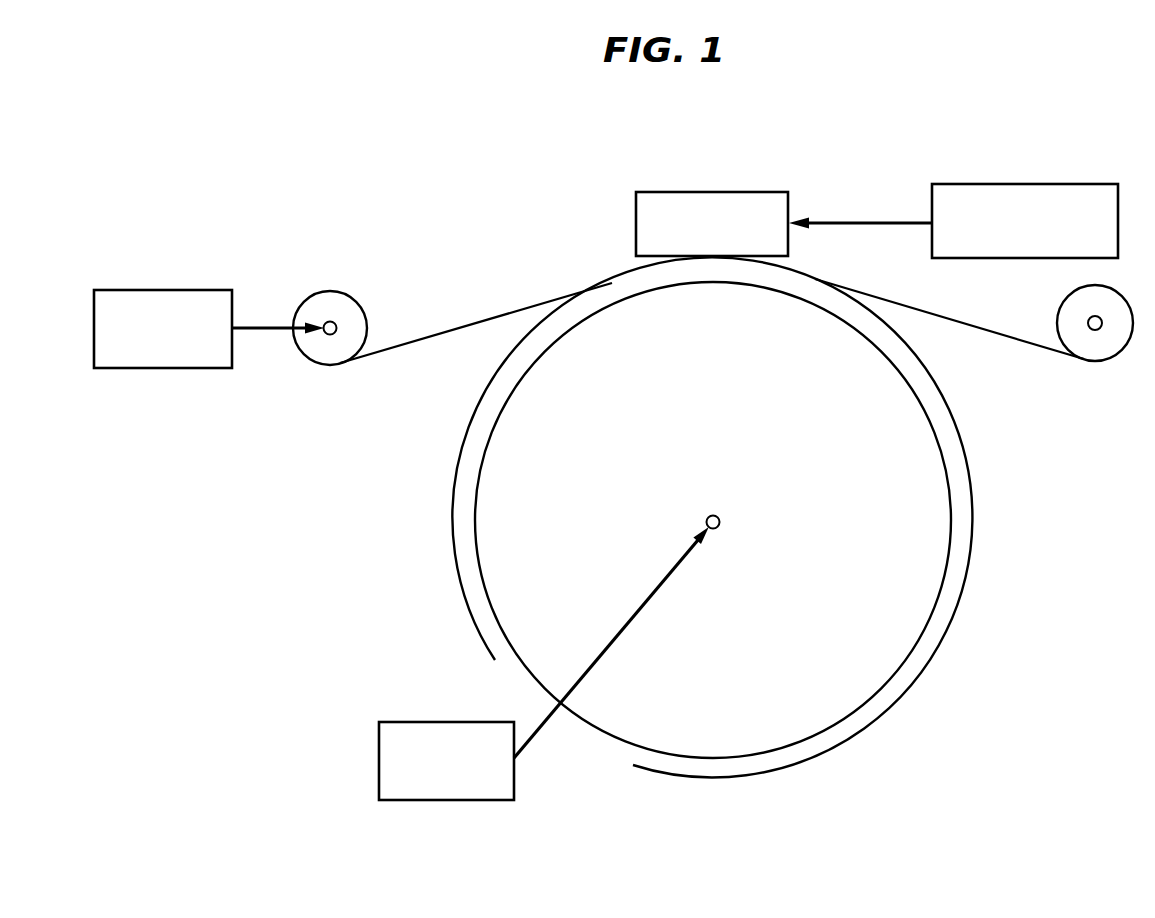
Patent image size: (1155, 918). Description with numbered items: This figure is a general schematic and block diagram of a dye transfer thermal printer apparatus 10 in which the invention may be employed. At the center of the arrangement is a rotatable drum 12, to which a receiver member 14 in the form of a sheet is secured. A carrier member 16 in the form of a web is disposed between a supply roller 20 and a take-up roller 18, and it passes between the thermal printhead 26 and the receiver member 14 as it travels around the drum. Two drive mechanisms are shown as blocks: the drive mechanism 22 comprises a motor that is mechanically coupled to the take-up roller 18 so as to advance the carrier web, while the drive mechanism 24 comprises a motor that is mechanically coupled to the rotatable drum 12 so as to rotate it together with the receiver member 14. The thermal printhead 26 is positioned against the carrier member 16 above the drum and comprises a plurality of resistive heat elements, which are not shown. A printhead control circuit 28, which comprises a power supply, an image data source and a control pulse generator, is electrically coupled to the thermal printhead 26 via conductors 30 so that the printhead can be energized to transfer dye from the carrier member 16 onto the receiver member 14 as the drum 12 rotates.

The dye transfer thermal printer apparatus 10 is at (560, 142).
The rotatable drum 12 is at (791, 610).
The receiver member 14 is at (801, 765).
The carrier member 16 is at (900, 304).
The take-up roller 18 is at (324, 293).
The supply roller 20 is at (1118, 355).
The drive mechanism 22 is at (121, 290).
The drive mechanism 24 is at (412, 722).
The thermal printhead 26 is at (712, 191).
The printhead control circuit 28 is at (1036, 184).
The conductors 30 is at (858, 222).